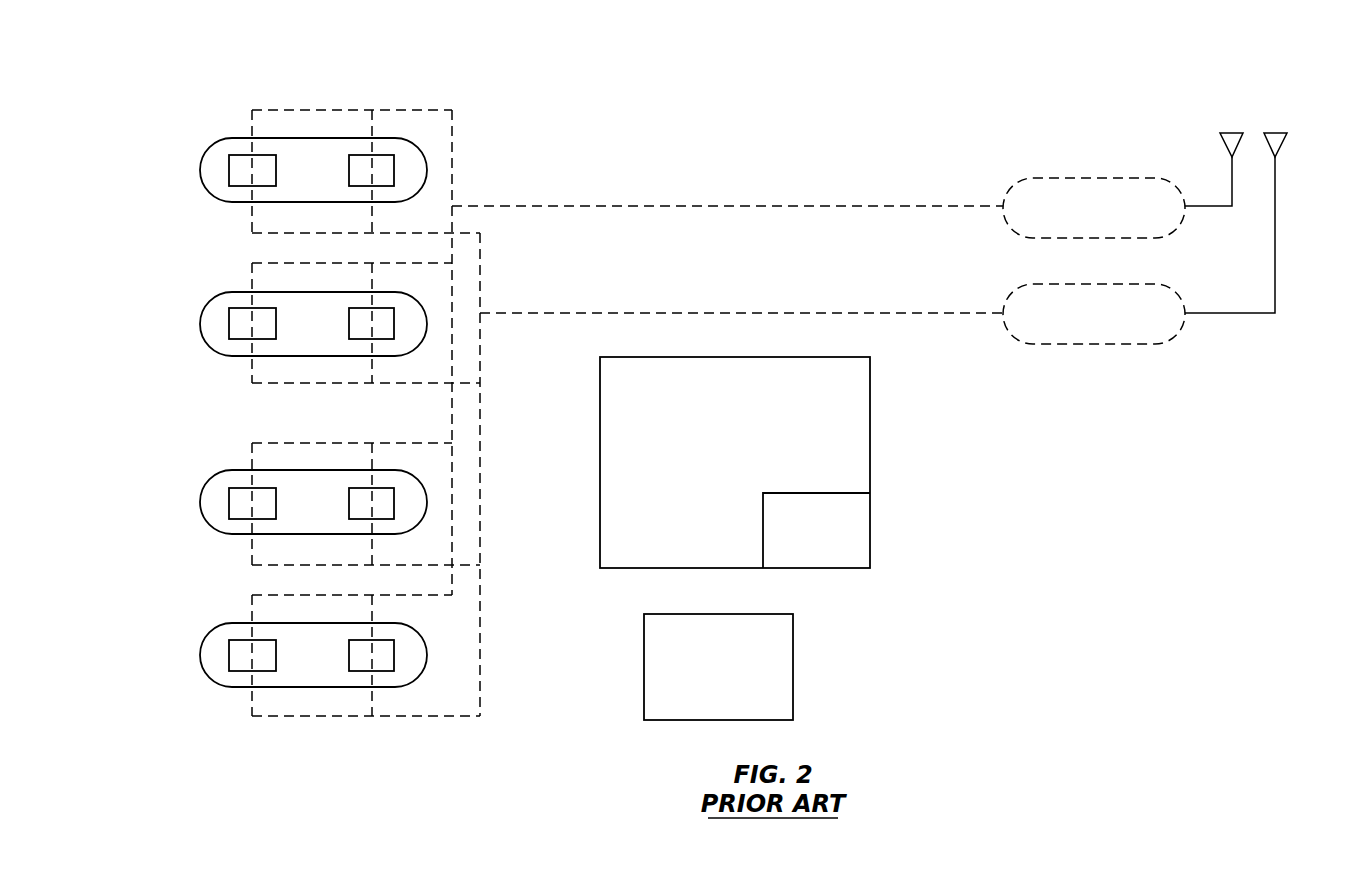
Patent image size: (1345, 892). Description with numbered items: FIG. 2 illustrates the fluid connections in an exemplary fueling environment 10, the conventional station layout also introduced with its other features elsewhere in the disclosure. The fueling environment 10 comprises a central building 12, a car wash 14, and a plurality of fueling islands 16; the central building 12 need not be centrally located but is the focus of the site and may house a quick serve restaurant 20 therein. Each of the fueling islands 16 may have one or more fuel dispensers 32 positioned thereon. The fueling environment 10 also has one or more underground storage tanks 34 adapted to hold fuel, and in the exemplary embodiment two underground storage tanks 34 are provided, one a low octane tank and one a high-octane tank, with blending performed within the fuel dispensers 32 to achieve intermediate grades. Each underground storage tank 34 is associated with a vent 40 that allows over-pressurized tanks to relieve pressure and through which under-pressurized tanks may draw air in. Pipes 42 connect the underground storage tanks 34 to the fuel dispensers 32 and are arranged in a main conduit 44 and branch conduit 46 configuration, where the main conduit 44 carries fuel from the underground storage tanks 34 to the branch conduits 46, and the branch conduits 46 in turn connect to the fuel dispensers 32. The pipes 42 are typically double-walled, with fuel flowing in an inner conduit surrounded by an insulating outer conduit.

The fueling environment 10 is at (889, 110).
The central building 12 is at (793, 357).
The car wash 14 is at (793, 642).
The fueling islands 16 is at (214, 142).
The quick serve restaurant 20 is at (808, 493).
The fuel dispensers 32 is at (349, 173).
The underground storage tanks 34 is at (1130, 178).
The vent 40 is at (1232, 130).
The pipes 42 is at (598, 192).
The main conduit 44 is at (452, 173).
The branch conduit 46 is at (390, 110).